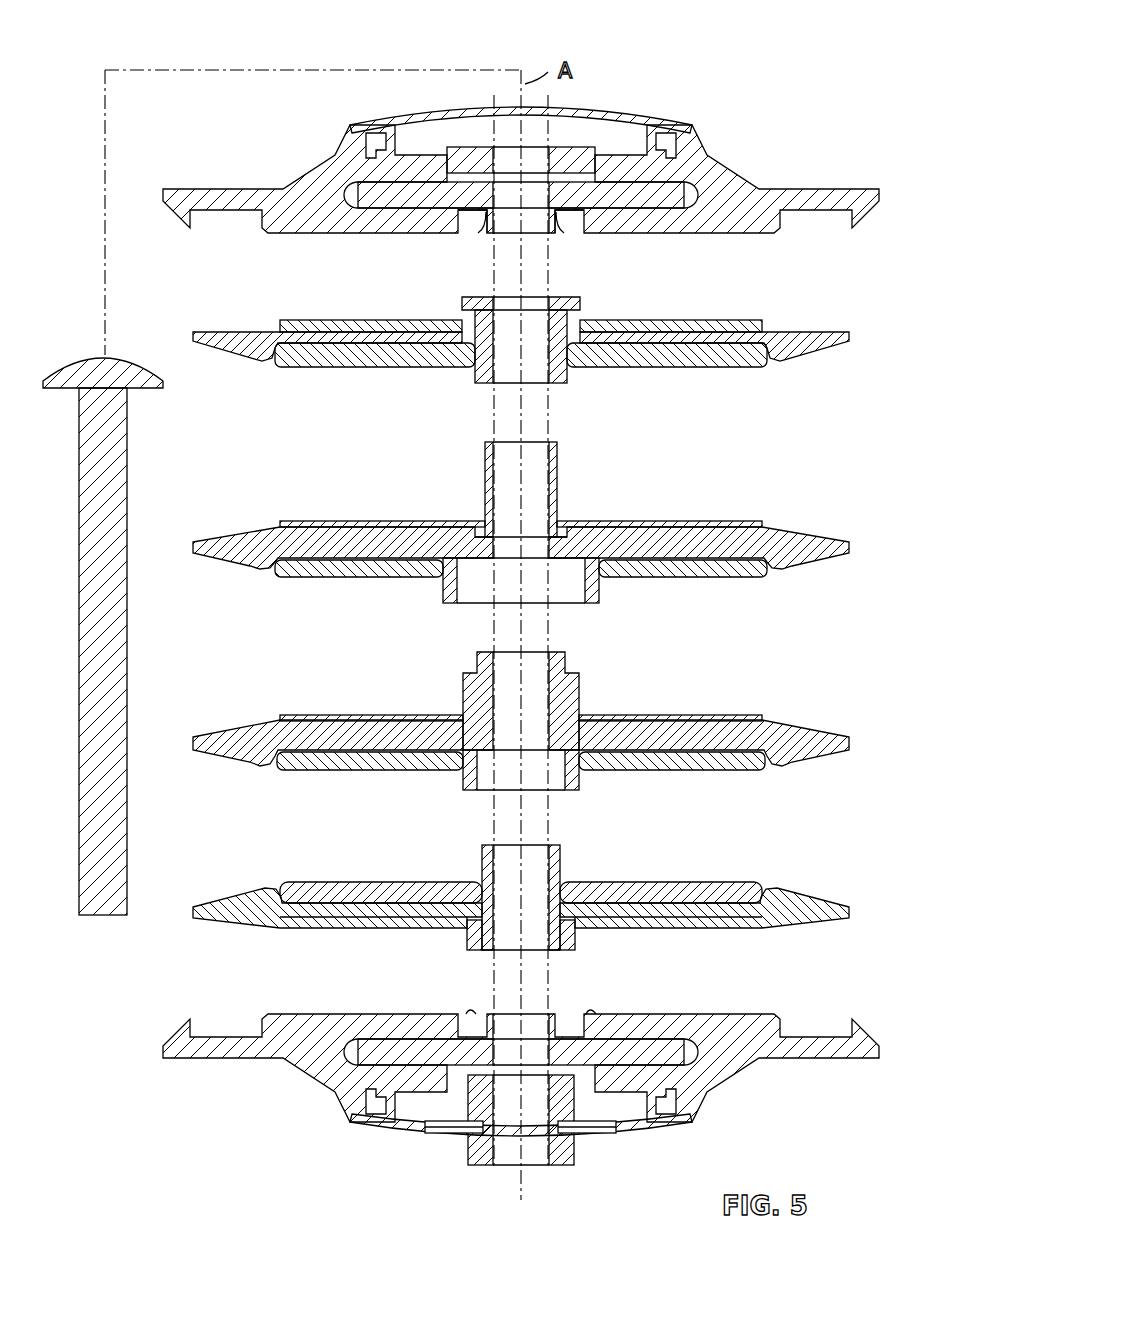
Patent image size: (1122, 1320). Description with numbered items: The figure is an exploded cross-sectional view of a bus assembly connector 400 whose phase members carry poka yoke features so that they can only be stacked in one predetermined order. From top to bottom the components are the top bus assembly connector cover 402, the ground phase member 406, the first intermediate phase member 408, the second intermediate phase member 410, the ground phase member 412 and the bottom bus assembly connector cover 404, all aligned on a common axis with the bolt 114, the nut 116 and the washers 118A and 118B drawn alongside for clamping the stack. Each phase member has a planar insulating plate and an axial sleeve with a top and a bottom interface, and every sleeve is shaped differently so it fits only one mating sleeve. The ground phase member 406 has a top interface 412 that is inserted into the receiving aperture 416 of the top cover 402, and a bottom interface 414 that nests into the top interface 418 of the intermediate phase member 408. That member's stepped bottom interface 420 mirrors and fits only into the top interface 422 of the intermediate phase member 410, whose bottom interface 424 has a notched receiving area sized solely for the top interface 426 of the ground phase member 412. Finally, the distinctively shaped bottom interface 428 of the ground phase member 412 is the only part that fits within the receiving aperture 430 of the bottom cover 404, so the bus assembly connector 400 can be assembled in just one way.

The bus assembly connector 400 is at (682, 52).
The bolt 114 is at (85, 368).
The nut 116 is at (535, 1160).
The washer 118A is at (665, 200).
The washer 118B is at (410, 1060).
The top bus assembly connector cover 402 is at (845, 207).
The bottom bus assembly connector cover 404 is at (838, 1055).
The ground phase member 406 is at (815, 333).
The first intermediate phase member 408 is at (822, 545).
The second intermediate phase member 410 is at (808, 740).
The ground phase member / top interface 412 is at (583, 309).
The bottom interface 414 is at (470, 383).
The receiving aperture 416 is at (482, 230).
The top interface 418 is at (485, 462).
The stepped bottom interface 420 is at (450, 568).
The top interface 422 is at (462, 680).
The bottom interface 424 is at (470, 756).
The top interface 426 is at (482, 882).
The bottom interface 428 is at (475, 935).
The receiving aperture 430 is at (480, 1018).